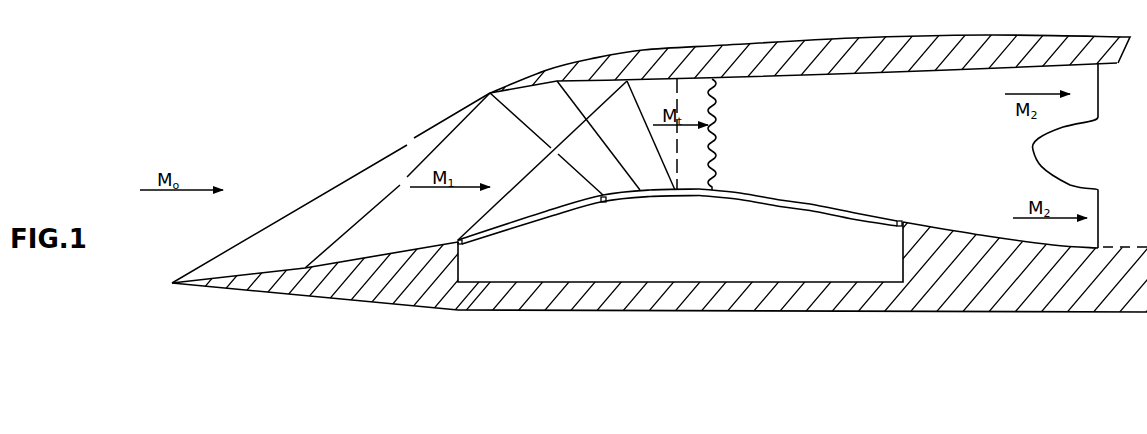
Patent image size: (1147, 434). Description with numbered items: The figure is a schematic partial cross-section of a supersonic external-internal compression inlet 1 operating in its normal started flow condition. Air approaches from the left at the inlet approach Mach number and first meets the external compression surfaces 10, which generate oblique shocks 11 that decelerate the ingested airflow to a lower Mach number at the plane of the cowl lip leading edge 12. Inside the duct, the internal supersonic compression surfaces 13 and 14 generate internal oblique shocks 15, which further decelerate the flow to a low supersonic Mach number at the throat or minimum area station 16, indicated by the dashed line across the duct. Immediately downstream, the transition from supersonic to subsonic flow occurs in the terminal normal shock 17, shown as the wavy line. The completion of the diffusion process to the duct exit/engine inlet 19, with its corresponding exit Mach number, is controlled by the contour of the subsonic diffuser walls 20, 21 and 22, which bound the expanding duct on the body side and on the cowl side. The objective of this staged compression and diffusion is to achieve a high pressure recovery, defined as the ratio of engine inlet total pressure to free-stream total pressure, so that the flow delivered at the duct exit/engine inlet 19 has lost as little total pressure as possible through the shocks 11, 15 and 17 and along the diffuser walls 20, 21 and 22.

The supersonic external-internal compression inlet 1 is at (412, 118).
The external compression surfaces 10 is at (307, 264).
The oblique shocks 11 is at (363, 217).
The cowl lip leading edge 12 is at (490, 93).
The internal supersonic compression surface 13 is at (552, 217).
The internal supersonic compression surface 14 is at (608, 87).
The internal oblique shocks 15 is at (568, 156).
The throat or minimum area station 16 is at (680, 153).
The terminal normal shock 17 is at (716, 139).
The duct exit/engine inlet 19 is at (1098, 80).
The subsonic diffuser wall 20 is at (815, 203).
The subsonic diffuser wall 21 is at (950, 228).
The subsonic diffuser wall 22 is at (900, 74).